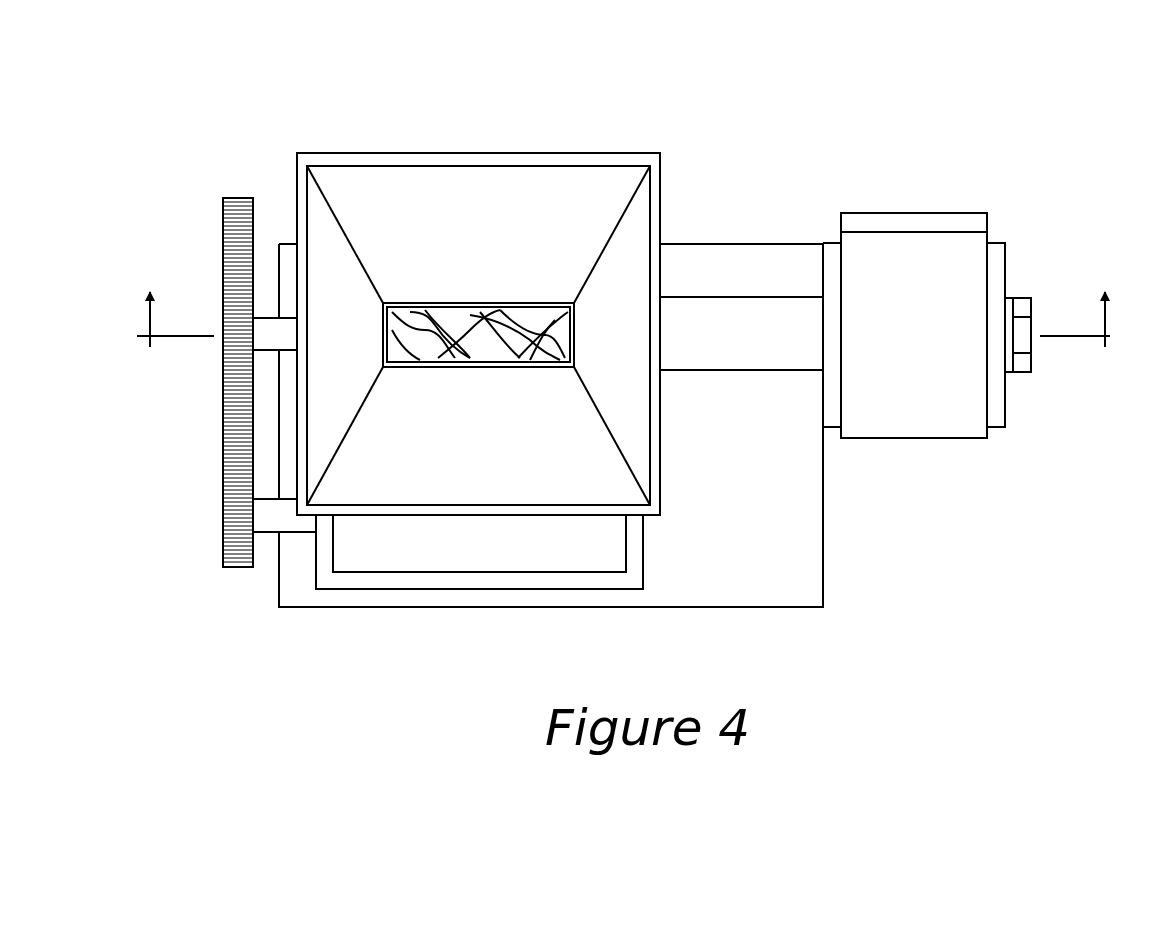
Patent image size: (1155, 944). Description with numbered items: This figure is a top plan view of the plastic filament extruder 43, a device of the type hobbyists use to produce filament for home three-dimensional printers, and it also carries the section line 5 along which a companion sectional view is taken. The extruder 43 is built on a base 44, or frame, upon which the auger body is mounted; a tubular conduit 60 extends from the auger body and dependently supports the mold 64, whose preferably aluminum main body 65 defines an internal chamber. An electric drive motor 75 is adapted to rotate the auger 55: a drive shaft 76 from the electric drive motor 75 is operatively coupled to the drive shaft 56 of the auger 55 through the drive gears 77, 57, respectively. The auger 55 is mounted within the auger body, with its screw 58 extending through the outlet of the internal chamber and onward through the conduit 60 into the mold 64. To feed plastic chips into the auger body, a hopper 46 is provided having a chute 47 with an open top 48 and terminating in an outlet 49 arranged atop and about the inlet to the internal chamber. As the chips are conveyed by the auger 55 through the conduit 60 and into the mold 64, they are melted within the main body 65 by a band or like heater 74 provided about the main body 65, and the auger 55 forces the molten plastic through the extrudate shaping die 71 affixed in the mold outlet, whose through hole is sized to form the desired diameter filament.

The section line 5- 5 is at (623, 342).
The extruder 43 is at (850, 120).
The base 44 is at (800, 562).
The hopper 46 is at (528, 136).
The chute 47 is at (420, 160).
The open top 48 is at (656, 458).
The outlet 49 is at (433, 368).
The auger 55 is at (467, 320).
The drive shaft 56 is at (262, 330).
The drive gear 57 is at (236, 198).
The screw 58 is at (540, 345).
The tubular conduit 60 is at (728, 318).
The mold 64 is at (1021, 204).
The main body 65 is at (998, 407).
The extrudate shaping die 71 is at (1025, 305).
The heater 74 is at (900, 420).
The electric drive motor 75 is at (395, 580).
The drive shaft 76 is at (272, 520).
The drive gear 77 is at (226, 482).